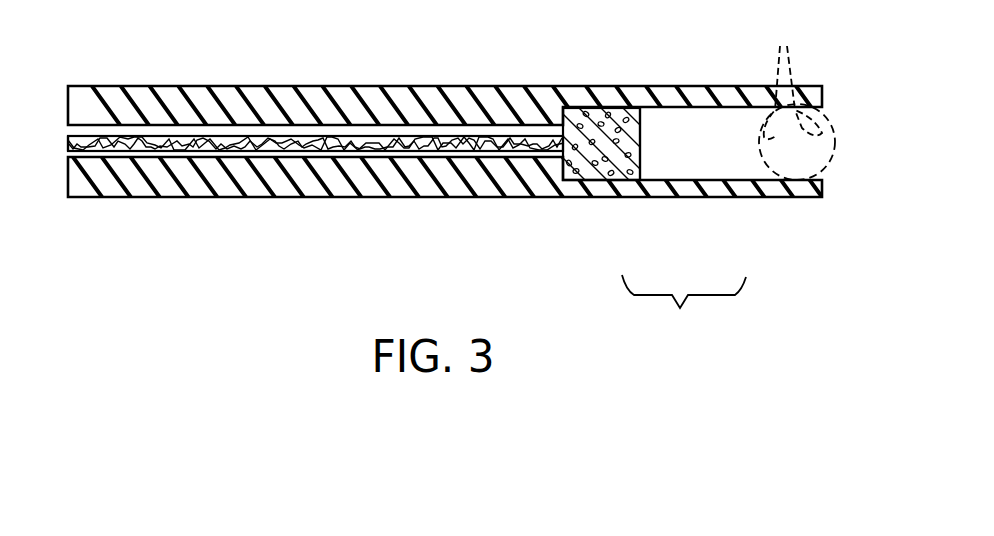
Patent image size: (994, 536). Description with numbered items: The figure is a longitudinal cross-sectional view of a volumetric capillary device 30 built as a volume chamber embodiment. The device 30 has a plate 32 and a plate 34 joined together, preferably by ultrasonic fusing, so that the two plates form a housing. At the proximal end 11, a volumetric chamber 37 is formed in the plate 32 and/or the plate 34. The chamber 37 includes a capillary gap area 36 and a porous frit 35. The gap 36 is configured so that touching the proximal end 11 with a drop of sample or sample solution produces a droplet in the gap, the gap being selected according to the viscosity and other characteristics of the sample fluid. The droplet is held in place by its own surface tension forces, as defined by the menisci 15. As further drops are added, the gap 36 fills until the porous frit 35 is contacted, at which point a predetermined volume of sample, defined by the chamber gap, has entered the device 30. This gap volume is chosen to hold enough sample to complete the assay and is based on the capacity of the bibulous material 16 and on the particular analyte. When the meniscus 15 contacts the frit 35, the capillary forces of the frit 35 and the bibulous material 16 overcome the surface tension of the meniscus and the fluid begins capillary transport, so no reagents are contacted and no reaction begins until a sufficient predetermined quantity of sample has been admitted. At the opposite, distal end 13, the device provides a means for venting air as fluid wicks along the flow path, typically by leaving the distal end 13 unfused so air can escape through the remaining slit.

The volumetric capillary device 30 is at (476, 177).
The plate 32 is at (505, 96).
The plate 34 is at (425, 175).
The bibulous material 16 is at (228, 148).
The distal end 13 is at (60, 153).
The porous frit 35 is at (612, 160).
The capillary gap area 36 is at (698, 163).
The volumetric chamber 37 is at (684, 306).
The menisci 15 is at (793, 80).
The proximal end 11 is at (846, 180).